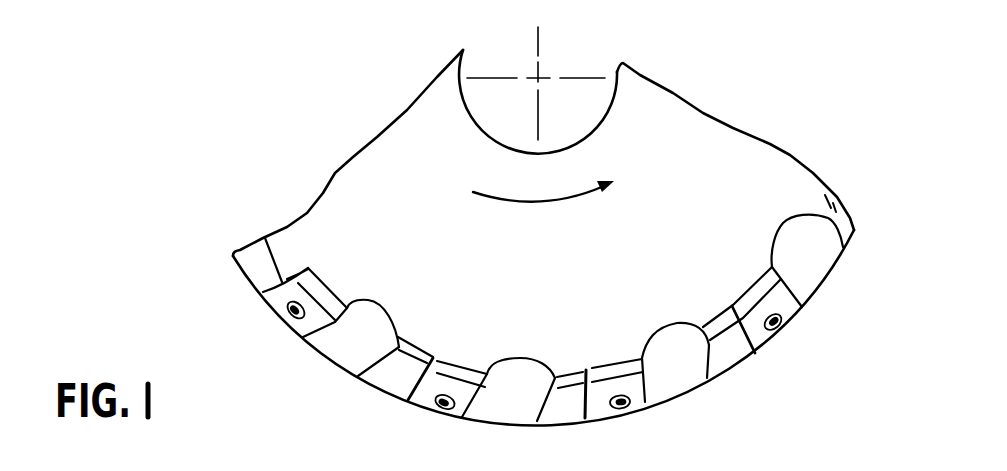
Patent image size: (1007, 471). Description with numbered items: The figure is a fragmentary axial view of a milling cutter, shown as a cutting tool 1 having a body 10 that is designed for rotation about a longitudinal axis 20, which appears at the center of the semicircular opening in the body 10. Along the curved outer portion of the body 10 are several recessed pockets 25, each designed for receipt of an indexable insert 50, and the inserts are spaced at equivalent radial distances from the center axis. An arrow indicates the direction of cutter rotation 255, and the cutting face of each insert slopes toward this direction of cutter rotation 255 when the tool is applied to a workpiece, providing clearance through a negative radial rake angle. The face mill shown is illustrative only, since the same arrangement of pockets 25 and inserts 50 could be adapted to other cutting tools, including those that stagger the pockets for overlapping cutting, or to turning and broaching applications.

The cutting tool 1 is at (461, 34).
The body 10 is at (378, 137).
The longitudinal axis 20 is at (540, 78).
The recessed pocket 25 is at (610, 367).
The indexable insert 50 is at (627, 417).
The direction of cutter rotation 255 is at (543, 184).